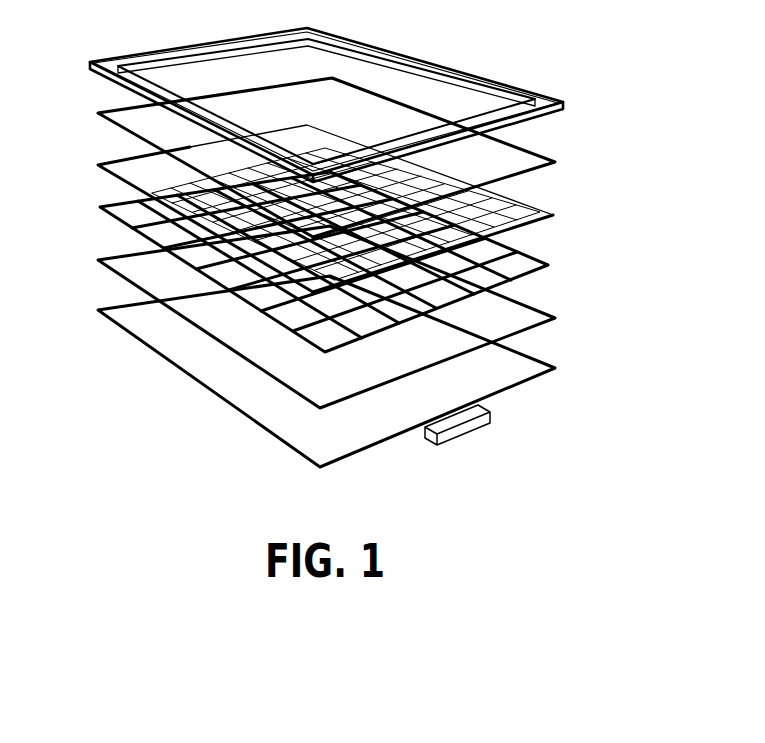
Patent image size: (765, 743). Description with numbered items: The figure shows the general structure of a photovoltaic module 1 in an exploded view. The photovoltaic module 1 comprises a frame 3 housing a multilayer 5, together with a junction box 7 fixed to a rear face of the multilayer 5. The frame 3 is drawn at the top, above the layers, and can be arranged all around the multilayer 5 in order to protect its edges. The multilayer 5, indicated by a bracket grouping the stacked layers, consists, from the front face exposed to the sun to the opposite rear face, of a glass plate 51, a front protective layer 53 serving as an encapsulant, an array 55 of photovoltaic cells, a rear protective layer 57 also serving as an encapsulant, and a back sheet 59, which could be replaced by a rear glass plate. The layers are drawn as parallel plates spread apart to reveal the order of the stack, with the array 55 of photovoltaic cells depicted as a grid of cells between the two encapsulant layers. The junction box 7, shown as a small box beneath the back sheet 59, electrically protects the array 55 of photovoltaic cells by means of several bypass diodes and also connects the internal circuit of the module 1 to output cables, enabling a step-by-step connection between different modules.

The photovoltaic module 1 is at (342, 265).
The frame 3 is at (562, 102).
The multilayer 5 is at (342, 272).
The junction box 7 is at (472, 433).
The glass plate 51 is at (550, 157).
The front protective layer 53 is at (550, 212).
The array of photovoltaic cells 55 is at (546, 264).
The rear protective layer 57 is at (548, 316).
The back sheet 59 is at (548, 366).